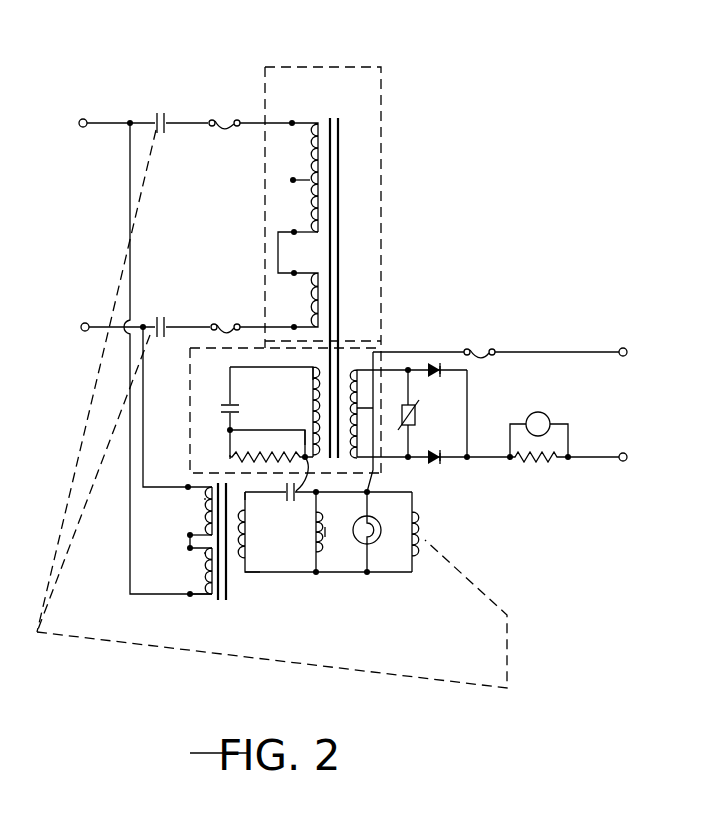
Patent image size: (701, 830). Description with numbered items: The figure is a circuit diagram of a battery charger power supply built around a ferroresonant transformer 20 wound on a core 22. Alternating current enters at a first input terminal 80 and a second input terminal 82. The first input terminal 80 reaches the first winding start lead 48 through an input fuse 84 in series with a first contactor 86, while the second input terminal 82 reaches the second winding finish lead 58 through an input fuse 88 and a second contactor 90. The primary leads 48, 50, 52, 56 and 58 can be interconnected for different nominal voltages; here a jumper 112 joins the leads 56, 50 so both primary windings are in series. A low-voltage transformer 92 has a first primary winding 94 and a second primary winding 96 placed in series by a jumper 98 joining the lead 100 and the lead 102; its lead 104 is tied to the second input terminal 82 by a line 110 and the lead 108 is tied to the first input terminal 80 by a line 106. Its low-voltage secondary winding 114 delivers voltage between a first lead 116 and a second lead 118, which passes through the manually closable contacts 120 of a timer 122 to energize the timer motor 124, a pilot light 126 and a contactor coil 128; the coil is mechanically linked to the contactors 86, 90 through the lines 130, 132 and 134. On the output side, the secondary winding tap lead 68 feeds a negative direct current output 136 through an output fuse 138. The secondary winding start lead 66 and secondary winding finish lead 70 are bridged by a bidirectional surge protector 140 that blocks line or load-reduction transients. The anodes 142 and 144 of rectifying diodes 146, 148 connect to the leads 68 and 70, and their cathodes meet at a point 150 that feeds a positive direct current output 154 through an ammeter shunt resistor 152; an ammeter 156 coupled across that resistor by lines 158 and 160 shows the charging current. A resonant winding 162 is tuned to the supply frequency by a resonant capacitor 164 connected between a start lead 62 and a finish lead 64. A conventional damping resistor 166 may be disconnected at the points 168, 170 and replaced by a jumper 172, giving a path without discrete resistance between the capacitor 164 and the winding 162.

The transformer 20 is at (316, 66).
The transformer core 22 is at (343, 122).
The first winding start lead 48 is at (308, 122).
The lead 50 is at (292, 273).
The lead 52 is at (291, 180).
The lead 56 is at (292, 232).
The second winding finish lead 58 is at (310, 322).
The start lead 62 is at (276, 368).
The finish lead 64 is at (286, 488).
The secondary winding start lead 66 is at (360, 369).
The secondary winding tap lead 68 is at (357, 415).
The secondary winding finish lead 70 is at (374, 472).
The first input terminal 80 is at (83, 119).
The second input terminal 82 is at (84, 322).
The input fuse 84 is at (222, 120).
The first contactor 86 is at (161, 112).
The input fuse 88 is at (225, 323).
The second contactor 90 is at (161, 317).
The low-voltage transformer 92 is at (222, 599).
The first primary winding 94 is at (205, 500).
The second primary winding 96 is at (190, 594).
The jumper 98 is at (190, 548).
The lead 100 is at (190, 534).
The lead 102 is at (205, 552).
The lead 104 is at (188, 486).
The line 106 is at (128, 185).
The lead 108 is at (205, 585).
The line 110 is at (141, 405).
The jumper 112 is at (278, 255).
The low-voltage secondary winding 114 is at (246, 540).
The first lead 116 is at (283, 494).
The second lead 118 is at (264, 572).
The manually closable contacts 120 is at (317, 491).
The timer 122 is at (315, 556).
The timer motor 124 is at (326, 545).
The pilot light 126 is at (373, 546).
The contactor coil 128 is at (422, 525).
The line 130 is at (508, 650).
The line 132 is at (74, 472).
The line 134 is at (80, 520).
The negative direct current output 136 is at (624, 348).
The output fuse 138 is at (480, 350).
The bidirectional surge protector 140 is at (415, 414).
The anode 142 is at (430, 364).
The anode 144 is at (436, 460).
The rectifying diode 146 is at (440, 376).
The rectifying diode 148 is at (440, 456).
The point 150 is at (469, 459).
The ammeter shunt resistor 152 is at (538, 461).
The positive direct current output 154 is at (626, 453).
The ammeter 156 is at (540, 412).
The line 158 is at (510, 436).
The line 160 is at (570, 436).
The resonant winding 162 is at (321, 381).
The resonant capacitor 164 is at (229, 404).
The damping resistor 166 is at (245, 456).
The point 168 is at (232, 457).
The point 170 is at (300, 457).
The jumper 172 is at (305, 428).